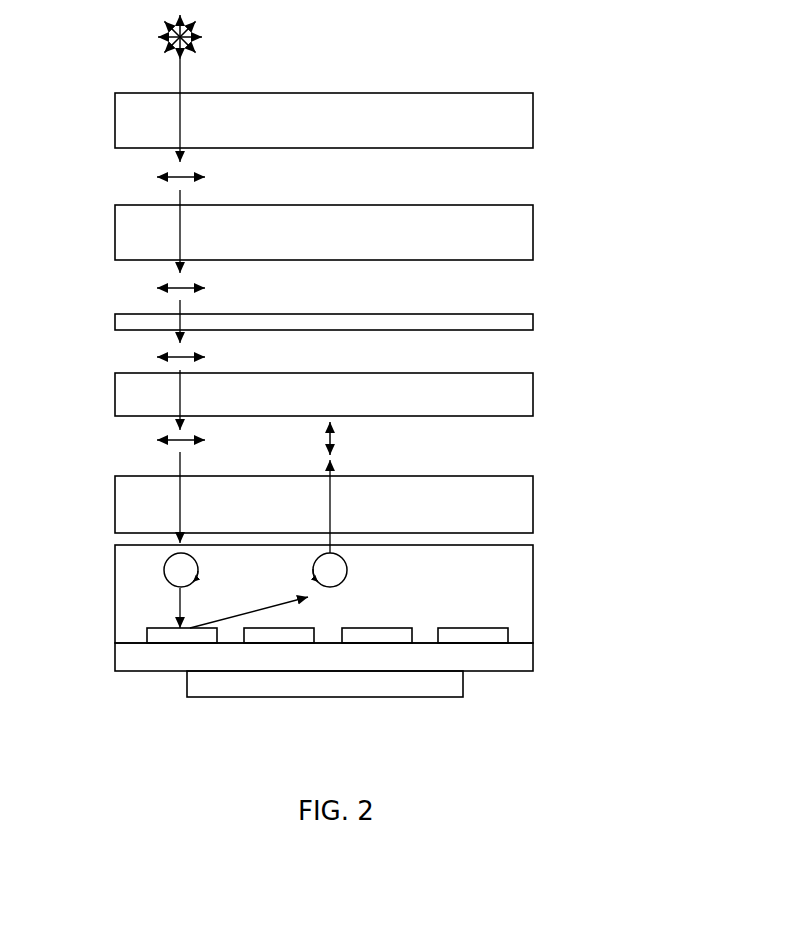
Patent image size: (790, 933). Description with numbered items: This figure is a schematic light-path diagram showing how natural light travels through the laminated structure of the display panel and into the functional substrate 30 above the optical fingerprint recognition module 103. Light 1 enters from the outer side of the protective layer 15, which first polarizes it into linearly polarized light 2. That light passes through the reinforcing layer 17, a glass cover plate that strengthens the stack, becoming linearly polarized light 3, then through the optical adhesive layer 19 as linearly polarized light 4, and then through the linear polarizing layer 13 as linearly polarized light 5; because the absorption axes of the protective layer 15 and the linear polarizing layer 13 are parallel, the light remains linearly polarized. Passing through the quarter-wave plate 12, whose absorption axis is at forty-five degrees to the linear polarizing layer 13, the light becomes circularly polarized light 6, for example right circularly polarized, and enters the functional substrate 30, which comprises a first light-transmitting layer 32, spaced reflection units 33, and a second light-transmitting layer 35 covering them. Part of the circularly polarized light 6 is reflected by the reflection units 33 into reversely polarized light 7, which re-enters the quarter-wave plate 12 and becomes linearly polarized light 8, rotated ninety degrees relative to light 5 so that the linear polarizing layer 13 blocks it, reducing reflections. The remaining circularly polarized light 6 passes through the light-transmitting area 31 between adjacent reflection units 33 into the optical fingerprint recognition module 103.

The light 1 is at (155, 37).
The linearly polarized light 2 is at (153, 177).
The linearly polarized light 3 is at (153, 288).
The linearly polarized light 4 is at (153, 357).
The linearly polarized light 5 is at (153, 440).
The circularly polarized light 6 is at (164, 572).
The reversely polarized light 7 is at (318, 580).
The linearly polarized light 8 is at (340, 441).
The quarter-wave plate 12 is at (508, 510).
The linear polarizing layer 13 is at (497, 397).
The protective layer 15 is at (507, 120).
The reinforcing layer 17 is at (497, 232).
The optical adhesive layer 19 is at (492, 322).
The functional substrate 30 is at (396, 608).
The light-transmitting area 31 is at (330, 634).
The first light-transmitting layer 32 is at (522, 655).
The reflection units 33 is at (497, 637).
The second light-transmitting layer 35 is at (505, 613).
The optical fingerprint recognition module 103 is at (430, 688).